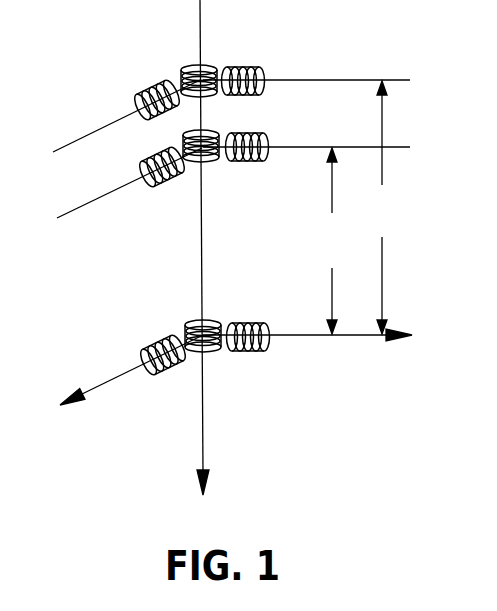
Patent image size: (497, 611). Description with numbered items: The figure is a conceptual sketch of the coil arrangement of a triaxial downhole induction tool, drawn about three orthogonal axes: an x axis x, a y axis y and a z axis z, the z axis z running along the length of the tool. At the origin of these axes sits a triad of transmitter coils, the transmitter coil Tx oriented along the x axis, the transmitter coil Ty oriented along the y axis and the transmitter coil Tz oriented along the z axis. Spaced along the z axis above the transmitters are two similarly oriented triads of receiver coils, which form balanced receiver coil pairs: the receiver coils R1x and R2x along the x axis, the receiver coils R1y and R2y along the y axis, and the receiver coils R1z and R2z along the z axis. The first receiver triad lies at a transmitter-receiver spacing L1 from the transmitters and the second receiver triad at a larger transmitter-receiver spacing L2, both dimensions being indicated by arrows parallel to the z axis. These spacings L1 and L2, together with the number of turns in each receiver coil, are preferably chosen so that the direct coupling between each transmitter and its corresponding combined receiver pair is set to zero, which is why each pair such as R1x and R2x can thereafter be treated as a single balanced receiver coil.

The x axis x is at (122, 380).
The y axis y is at (320, 335).
The z axis z is at (204, 264).
The transmitter coil Tx is at (160, 371).
The transmitter coil Ty is at (266, 351).
The transmitter coil Tz is at (194, 319).
The receiver coil R1x is at (129, 184).
The receiver coil R1y is at (306, 164).
The receiver coil R1z is at (215, 167).
The receiver coil R2x is at (126, 115).
The receiver coil R2y is at (306, 68).
The receiver coil R2z is at (187, 62).
The transmitter-receiver spacing L1 is at (338, 241).
The transmitter-receiver spacing L2 is at (388, 207).